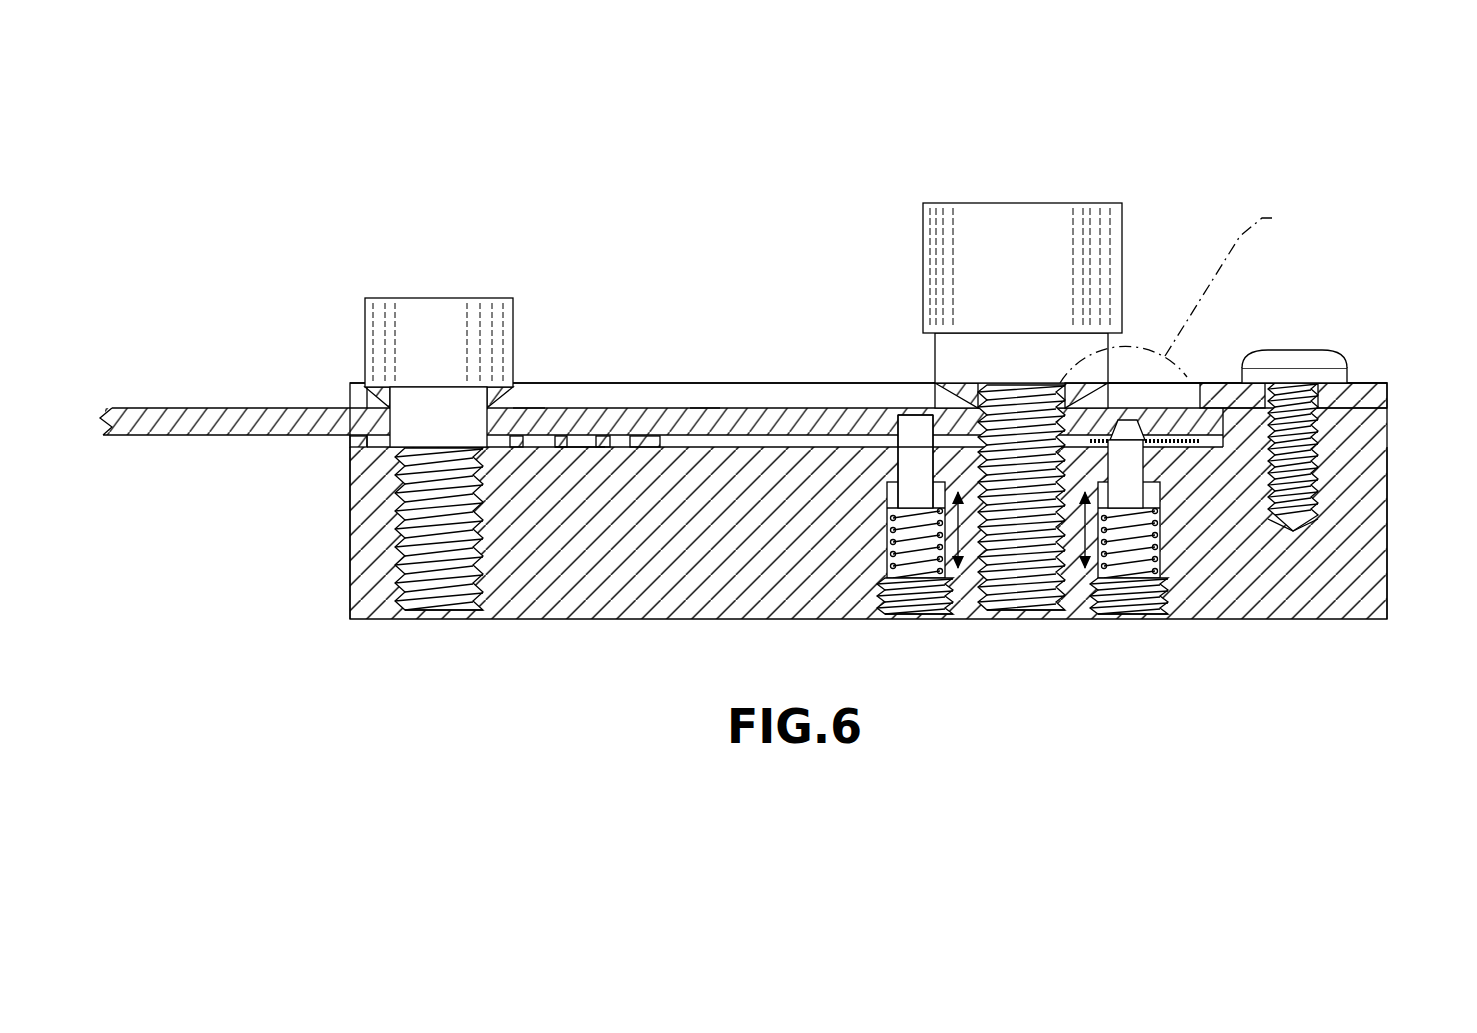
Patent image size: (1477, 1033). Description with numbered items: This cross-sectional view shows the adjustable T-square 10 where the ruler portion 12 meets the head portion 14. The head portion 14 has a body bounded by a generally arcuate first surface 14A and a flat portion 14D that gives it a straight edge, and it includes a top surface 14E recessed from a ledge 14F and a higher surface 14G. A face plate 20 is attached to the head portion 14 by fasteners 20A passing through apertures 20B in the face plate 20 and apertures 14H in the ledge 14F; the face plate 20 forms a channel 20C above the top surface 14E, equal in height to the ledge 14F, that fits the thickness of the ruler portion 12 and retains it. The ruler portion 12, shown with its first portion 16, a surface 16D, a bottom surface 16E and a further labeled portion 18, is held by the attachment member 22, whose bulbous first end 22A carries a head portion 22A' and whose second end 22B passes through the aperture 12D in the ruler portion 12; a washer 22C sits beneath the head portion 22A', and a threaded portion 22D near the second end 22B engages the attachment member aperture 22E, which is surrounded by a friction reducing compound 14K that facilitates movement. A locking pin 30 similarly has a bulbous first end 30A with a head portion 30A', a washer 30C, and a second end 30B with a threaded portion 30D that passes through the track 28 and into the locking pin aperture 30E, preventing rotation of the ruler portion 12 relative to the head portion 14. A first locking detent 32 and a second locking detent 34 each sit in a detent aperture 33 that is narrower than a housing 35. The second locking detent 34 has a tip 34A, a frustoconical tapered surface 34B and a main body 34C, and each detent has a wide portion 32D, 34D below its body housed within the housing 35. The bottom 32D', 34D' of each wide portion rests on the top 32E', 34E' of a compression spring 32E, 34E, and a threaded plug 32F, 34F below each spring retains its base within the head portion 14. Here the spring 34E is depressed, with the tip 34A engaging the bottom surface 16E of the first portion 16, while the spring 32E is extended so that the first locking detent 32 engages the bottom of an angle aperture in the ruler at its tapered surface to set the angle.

The adjustable T-square 10 is at (305, 122).
The ruler portion 12 is at (743, 404).
The second conductor plate 18 is at (185, 405).
The first portion 16 is at (672, 415).
The aperture 12D is at (505, 400).
The plate top surface 16D is at (700, 412).
The bottom surface 16E is at (660, 447).
The head portion 14 is at (345, 583).
The first surface 14A is at (1388, 470).
The flat portion 14D is at (350, 553).
The top surface 14E is at (730, 447).
The ledge 14F is at (1188, 385).
The higher surface 14G is at (1355, 385).
The apertures 14H is at (1300, 517).
The friction reducing compound 14K is at (580, 440).
The face plate 20 is at (627, 382).
The fasteners 20A is at (1315, 355).
The apertures 20B is at (1298, 380).
The channel 20C is at (1222, 385).
The attachment member 22 is at (405, 292).
The bulbous first end 22A is at (434, 295).
The head portion 22A' is at (438, 313).
The second end 22B is at (435, 618).
The washer 22C is at (350, 398).
The threaded portion 22D is at (400, 510).
The attachment member aperture 22E is at (450, 618).
The track 28 is at (950, 447).
The locking pin 30 is at (985, 200).
The bulbous first end 30A is at (1022, 219).
The head portion 30A' is at (1020, 238).
The second end 30B is at (1018, 618).
The washer 30C is at (1132, 385).
The threaded portion 30D is at (1025, 420).
The locking pin aperture 30E is at (1038, 618).
The first locking detent 32 is at (1177, 547).
The wide portion 32D is at (1179, 530).
The bottom 32D' is at (1191, 544).
The spring 32E is at (1129, 626).
The top 32E' is at (1180, 492).
The threaded plug 32F is at (1118, 610).
The detent aperture 33 is at (920, 447).
The second locking detent 34 is at (897, 470).
The tip 34A is at (912, 470).
The tapered surface 34B is at (906, 490).
The main body 34C is at (915, 461).
The wide portion 34D is at (856, 530).
The bottom 34D' is at (855, 544).
The spring 34E is at (915, 628).
The top 34E' is at (872, 492).
The threaded plug 34F is at (900, 608).
The housing 35 is at (928, 467).